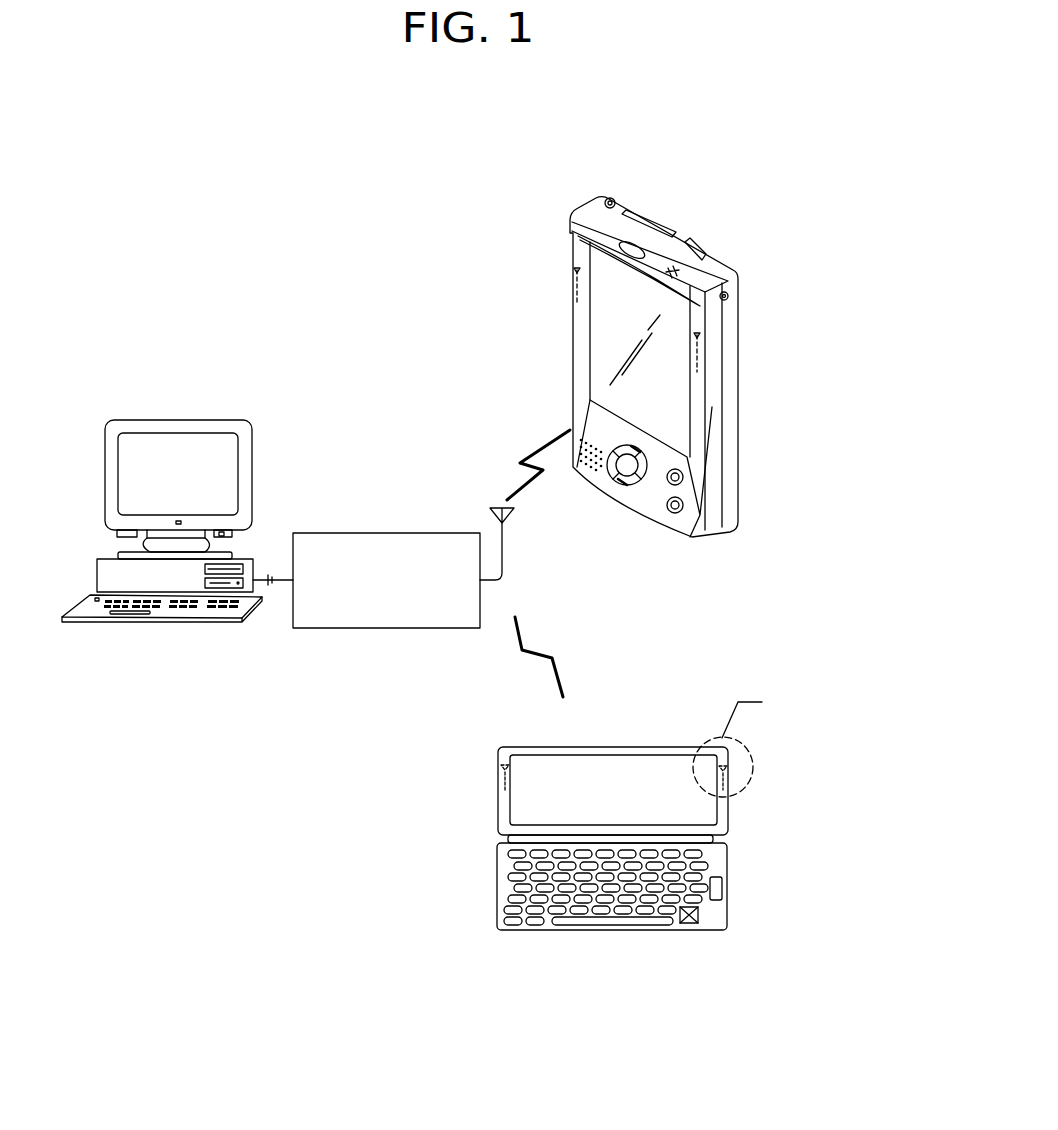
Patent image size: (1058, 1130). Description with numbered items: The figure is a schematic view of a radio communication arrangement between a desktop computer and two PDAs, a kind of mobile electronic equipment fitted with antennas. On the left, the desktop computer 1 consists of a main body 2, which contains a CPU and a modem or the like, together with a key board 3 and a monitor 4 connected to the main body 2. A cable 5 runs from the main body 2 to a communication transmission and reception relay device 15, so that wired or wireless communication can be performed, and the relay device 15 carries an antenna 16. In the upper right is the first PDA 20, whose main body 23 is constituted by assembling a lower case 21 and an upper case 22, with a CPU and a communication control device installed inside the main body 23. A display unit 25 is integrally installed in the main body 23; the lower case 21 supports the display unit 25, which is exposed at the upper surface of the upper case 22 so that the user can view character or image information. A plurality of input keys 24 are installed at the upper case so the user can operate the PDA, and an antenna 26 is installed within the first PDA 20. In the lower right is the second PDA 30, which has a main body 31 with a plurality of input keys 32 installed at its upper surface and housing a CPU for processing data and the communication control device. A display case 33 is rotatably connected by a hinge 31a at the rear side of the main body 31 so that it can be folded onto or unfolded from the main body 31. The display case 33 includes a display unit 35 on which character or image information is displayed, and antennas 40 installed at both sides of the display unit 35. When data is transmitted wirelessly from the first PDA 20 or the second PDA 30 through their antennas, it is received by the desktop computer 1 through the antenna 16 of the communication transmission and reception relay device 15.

The desktop computer 1 is at (148, 392).
The main body 2 is at (110, 572).
The key board 3 is at (178, 618).
The monitor 4 is at (130, 455).
The cable 5 is at (268, 586).
The communication transmission and reception relay device 15 is at (388, 533).
The antenna 16 is at (500, 507).
The first PDA 20 is at (639, 190).
The lower case 21 is at (728, 450).
The upper case 22 is at (713, 473).
The main body 23 is at (790, 480).
The input keys 24 is at (625, 481).
The display unit 25 is at (592, 330).
The antenna 26 is at (571, 285).
The second PDA 30 is at (575, 973).
The main body 31 is at (652, 933).
The hinge 31a is at (515, 835).
The input keys 32 is at (502, 907).
The display case 33 is at (590, 736).
The display unit 35 is at (655, 777).
The antenna 40 is at (503, 770).